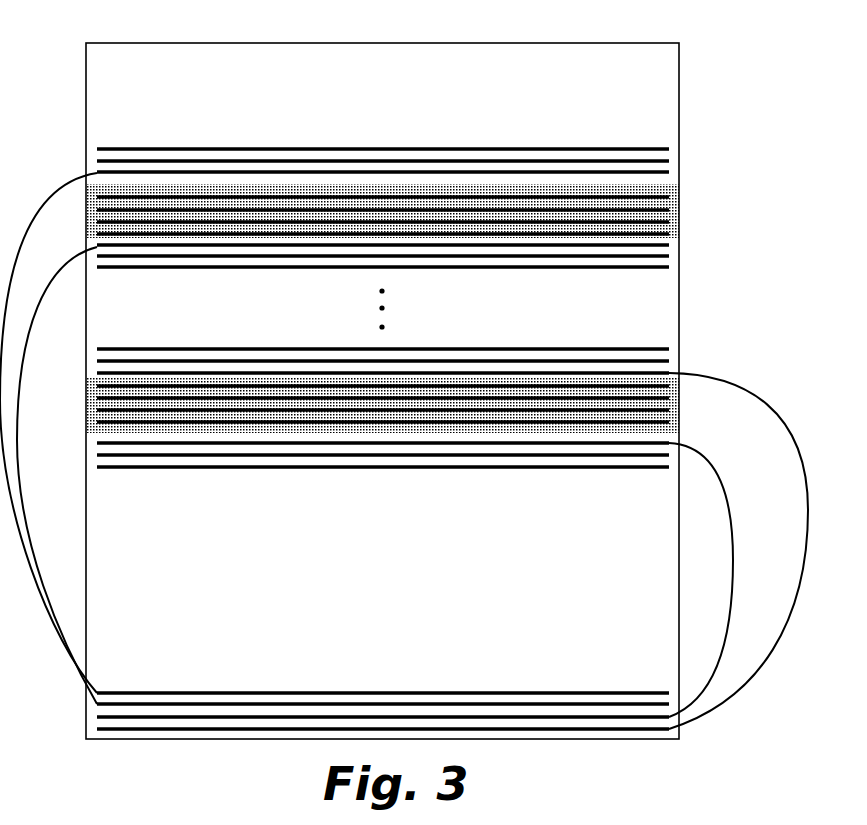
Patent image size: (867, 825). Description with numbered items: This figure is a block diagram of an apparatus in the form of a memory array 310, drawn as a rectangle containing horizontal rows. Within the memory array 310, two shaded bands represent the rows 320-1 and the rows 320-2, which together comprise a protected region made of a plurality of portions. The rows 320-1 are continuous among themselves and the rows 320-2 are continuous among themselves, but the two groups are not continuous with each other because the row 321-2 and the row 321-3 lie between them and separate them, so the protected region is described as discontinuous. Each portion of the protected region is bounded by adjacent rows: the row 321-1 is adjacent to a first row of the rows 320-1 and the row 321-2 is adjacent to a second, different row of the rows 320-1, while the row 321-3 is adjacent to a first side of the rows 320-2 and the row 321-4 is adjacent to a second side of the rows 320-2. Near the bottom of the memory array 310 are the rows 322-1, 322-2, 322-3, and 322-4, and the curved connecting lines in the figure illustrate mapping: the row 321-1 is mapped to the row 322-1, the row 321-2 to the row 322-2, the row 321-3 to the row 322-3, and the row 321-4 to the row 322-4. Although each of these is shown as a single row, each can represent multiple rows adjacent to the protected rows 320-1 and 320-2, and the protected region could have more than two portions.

The memory array 310 is at (158, 48).
The rows 320-1 is at (688, 184).
The rows 320-2 is at (688, 378).
The row 321-1 is at (578, 172).
The row 321-2 is at (578, 244).
The row 321-3 is at (578, 373).
The row 321-4 is at (578, 444).
The row 322-1 is at (186, 693).
The row 322-2 is at (280, 704).
The row 322-3 is at (375, 716).
The row 322-4 is at (470, 728).